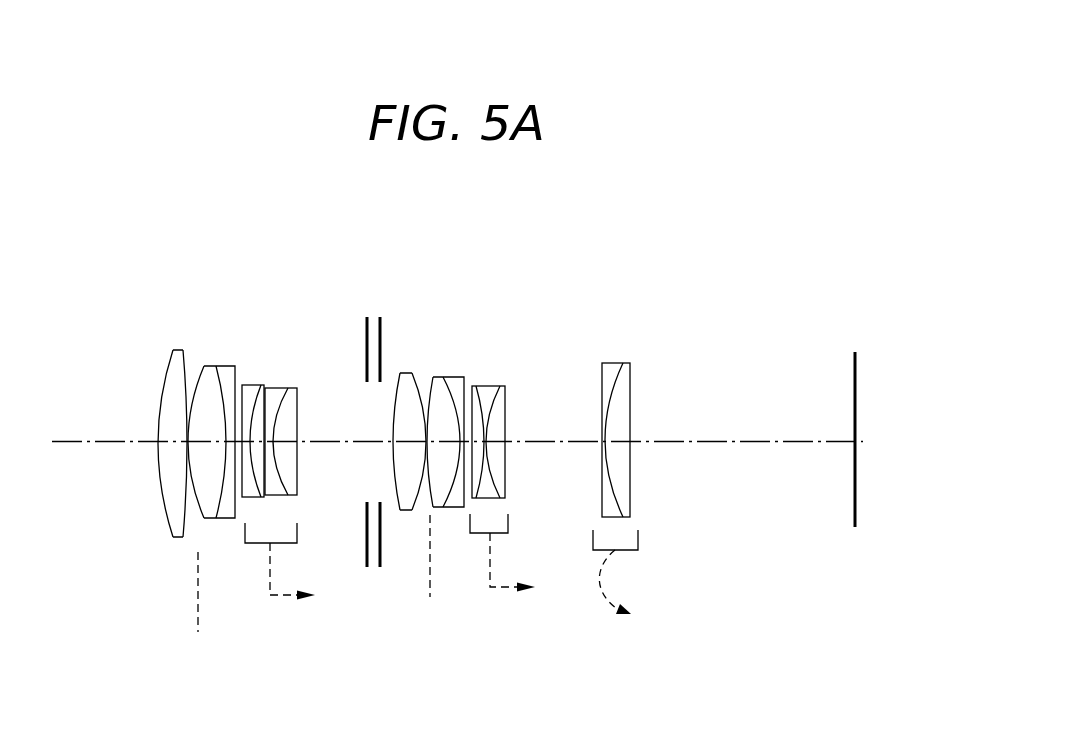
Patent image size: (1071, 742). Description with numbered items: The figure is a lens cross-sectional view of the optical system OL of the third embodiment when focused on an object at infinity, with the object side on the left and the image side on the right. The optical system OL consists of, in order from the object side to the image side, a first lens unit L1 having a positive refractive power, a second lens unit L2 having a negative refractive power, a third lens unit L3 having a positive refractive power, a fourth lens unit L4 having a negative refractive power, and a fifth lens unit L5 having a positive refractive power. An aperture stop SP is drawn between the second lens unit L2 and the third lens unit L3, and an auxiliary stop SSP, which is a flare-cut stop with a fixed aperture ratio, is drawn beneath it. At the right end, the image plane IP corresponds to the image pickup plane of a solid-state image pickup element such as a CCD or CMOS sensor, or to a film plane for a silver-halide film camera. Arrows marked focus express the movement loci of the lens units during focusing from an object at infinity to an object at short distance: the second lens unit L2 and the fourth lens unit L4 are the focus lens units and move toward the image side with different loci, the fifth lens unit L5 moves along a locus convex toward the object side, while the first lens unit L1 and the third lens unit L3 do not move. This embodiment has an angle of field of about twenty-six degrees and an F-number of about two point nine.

The optical system OL is at (155, 235).
The first lens unit L1 is at (157, 340).
The second lens unit L2 is at (242, 340).
The third lens unit L3 is at (393, 340).
The fourth lens unit L4 is at (507, 340).
The fifth lens unit L5 is at (597, 340).
The aperture stop SP is at (364, 330).
The auxiliary stop SSP is at (381, 556).
The image plane IP is at (856, 375).
The movement locus arrow focus is at (645, 590).